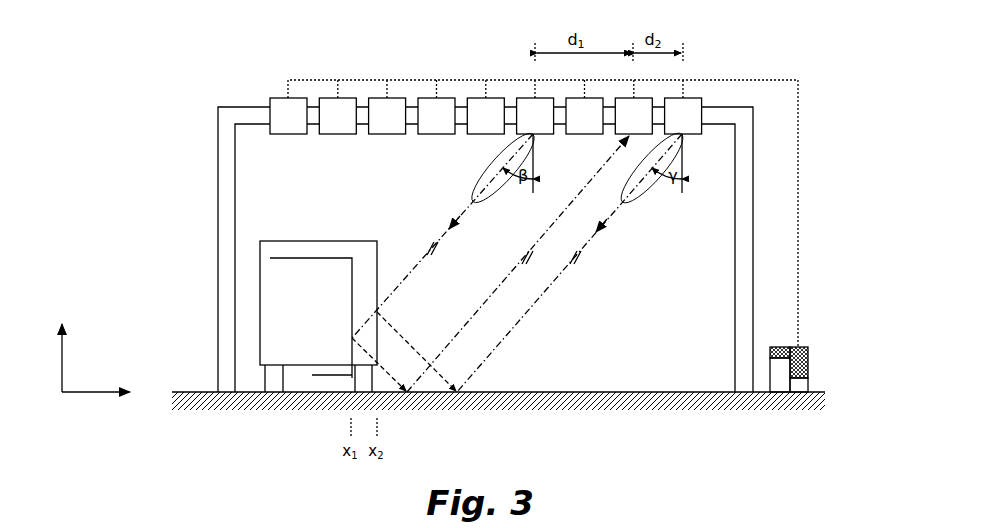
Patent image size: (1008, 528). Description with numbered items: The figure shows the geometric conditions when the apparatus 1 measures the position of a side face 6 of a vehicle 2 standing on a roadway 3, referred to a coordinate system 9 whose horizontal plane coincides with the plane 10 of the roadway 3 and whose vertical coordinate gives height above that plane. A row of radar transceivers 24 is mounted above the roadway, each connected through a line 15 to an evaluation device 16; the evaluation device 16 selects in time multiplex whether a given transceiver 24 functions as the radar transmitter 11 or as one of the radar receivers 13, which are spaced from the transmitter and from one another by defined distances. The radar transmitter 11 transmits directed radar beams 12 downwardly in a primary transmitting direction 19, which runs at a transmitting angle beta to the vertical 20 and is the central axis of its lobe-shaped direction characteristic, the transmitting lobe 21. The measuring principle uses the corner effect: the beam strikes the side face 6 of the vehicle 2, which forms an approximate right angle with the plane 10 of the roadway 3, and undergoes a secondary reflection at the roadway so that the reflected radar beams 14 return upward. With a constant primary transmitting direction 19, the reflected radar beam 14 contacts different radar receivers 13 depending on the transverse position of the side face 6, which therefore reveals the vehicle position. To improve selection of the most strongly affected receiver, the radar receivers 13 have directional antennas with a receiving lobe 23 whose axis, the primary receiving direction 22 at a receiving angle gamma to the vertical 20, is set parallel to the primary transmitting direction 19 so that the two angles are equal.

The apparatus 1 is at (190, 35).
The vehicle 2 is at (288, 258).
The roadway 3 is at (673, 392).
The side face 6 is at (354, 259).
The coordinate system 9 is at (88, 393).
The plane of the roadway 10 is at (601, 391).
The radar transmitter 11 is at (527, 97).
The radar beams 12 is at (395, 291).
The radar receivers 13 is at (640, 97).
The reflected radar beams 14 is at (487, 303).
The line 15 is at (800, 178).
The evaluation device 16 is at (808, 372).
The primary transmitting direction 19 is at (463, 215).
The vertical 20 is at (538, 178).
The transmitting lobe 21 is at (485, 178).
The primary receiving direction 22 is at (605, 228).
The receiving lobe 23 is at (637, 203).
The radar transceiver 24 is at (343, 97).